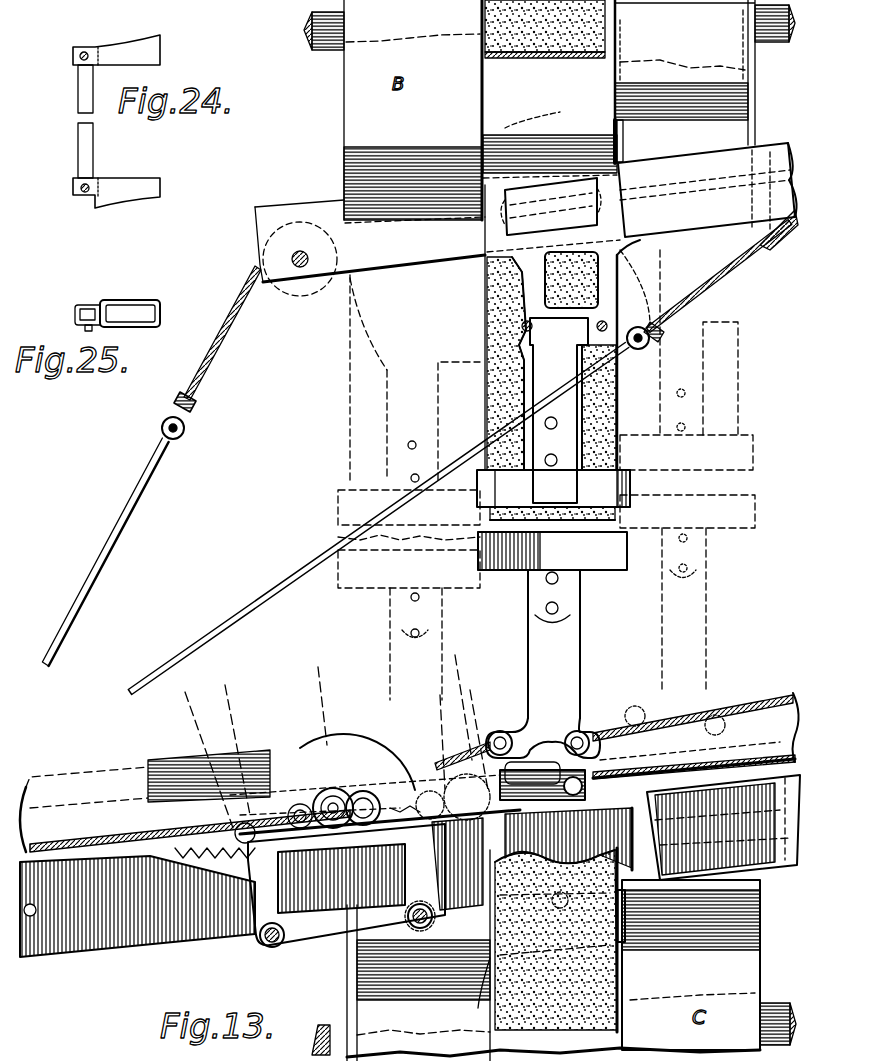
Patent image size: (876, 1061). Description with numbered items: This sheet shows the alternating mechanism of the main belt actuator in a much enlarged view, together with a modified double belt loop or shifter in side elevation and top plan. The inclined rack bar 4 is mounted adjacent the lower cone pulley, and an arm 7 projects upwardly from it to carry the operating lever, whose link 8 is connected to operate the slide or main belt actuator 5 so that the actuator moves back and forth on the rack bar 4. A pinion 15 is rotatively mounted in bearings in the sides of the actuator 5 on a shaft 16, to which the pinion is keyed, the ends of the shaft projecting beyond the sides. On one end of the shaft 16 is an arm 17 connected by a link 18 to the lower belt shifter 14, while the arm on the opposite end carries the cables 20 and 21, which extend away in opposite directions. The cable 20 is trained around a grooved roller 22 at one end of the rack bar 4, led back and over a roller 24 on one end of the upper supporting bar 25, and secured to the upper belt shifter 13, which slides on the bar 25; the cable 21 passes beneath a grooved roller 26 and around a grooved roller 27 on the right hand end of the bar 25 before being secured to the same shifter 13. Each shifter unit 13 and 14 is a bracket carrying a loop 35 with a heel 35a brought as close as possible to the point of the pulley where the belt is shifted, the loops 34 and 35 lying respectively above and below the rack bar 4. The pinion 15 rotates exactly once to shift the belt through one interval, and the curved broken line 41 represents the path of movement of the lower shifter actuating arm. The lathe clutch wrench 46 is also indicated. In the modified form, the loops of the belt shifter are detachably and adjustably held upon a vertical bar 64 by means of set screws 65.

In FIG. 24, the vertical bar 64 is at (88, 157).
In FIG. 24, the set screws 65 is at (80, 55).
In FIG. 13, the loop 35 is at (627, 142).
In FIG. 13, the heel 35a is at (560, 112).
In FIG. 13, the upper supporting bar 25 is at (707, 190).
In FIG. 13, the grooved roller 27 is at (773, 230).
In FIG. 13, the roller 24 is at (301, 291).
In FIG. 13, the upper belt shifter 13 is at (387, 394).
In FIG. 13, the loop 34 is at (553, 520).
In FIG. 13, the lower belt shifter 14 is at (740, 641).
In FIG. 13, the lathe clutch wrench 46 is at (128, 514).
In FIG. 13, the cable 20 is at (694, 499).
In FIG. 13, the grooved roller 22 is at (790, 720).
In FIG. 13, the grooved roller 26 is at (30, 823).
In FIG. 13, the cable 21 is at (155, 838).
In FIG. 13, the main belt actuator 5 is at (462, 920).
In FIG. 13, the arm 7 is at (548, 1025).
In FIG. 13, the rack bar 4 is at (723, 827).
In FIG. 13, the link 8 is at (306, 800).
In FIG. 13, the pinion 15 is at (322, 808).
In FIG. 13, the shaft 16 is at (350, 810).
In FIG. 13, the arm 17 is at (362, 803).
In FIG. 13, the link 18 is at (372, 812).
In FIG. 13, the curved broken line 41 is at (487, 802).